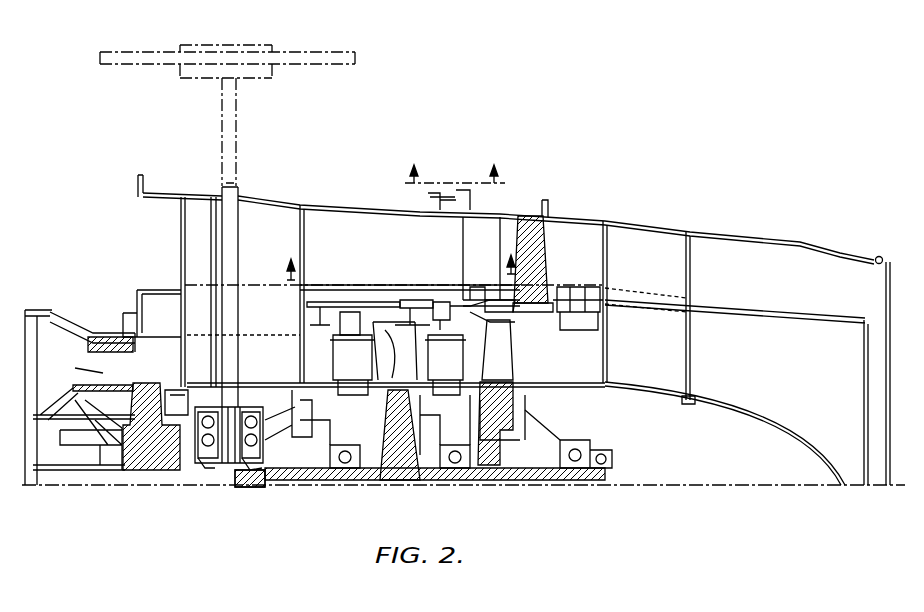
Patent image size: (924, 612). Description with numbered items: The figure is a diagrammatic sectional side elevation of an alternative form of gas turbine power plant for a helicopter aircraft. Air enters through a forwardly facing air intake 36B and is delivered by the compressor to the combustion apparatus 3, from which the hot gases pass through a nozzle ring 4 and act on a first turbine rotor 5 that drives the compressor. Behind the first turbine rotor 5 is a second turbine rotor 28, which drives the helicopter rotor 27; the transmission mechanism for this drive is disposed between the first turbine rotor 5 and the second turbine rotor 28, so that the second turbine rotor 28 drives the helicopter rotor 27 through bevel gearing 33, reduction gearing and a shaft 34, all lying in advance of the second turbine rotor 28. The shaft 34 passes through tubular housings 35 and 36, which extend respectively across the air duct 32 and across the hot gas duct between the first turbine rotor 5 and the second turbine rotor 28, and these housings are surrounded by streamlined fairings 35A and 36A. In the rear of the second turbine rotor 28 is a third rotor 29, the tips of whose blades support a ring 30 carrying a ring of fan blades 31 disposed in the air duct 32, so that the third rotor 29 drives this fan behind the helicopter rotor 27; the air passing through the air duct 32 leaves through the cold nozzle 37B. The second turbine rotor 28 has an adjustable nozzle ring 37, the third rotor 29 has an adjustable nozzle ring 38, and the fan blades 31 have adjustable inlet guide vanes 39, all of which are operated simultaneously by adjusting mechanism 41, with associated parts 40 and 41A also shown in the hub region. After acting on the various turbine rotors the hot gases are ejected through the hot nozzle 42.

The helicopter rotor 27 is at (318, 55).
The nozzle ring 4 is at (422, 160).
The combustion apparatus 3 is at (299, 255).
The tubular housing 35 is at (258, 205).
The streamlined fairing 35A is at (294, 205).
The shaft 34 is at (232, 232).
The air intake 36B is at (156, 257).
The tubular housing 36 is at (210, 345).
The streamlined fairing 36A is at (292, 367).
The air duct 32 is at (388, 256).
The adjusting mechanism 41 is at (335, 300).
The hub plate portion 41A is at (430, 300).
The seal member 40 is at (447, 300).
The adjustable inlet guide vanes 39 is at (497, 265).
The fan blades 31 is at (535, 237).
The nozzle 37B is at (885, 297).
The hot nozzle 42 is at (862, 375).
The first turbine rotor 5 is at (161, 378).
The adjustable nozzle ring 37 is at (365, 362).
The adjustable nozzle ring 38 is at (458, 362).
The third rotor 29 is at (513, 362).
The ring 30 is at (529, 313).
The second turbine rotor 28 is at (397, 362).
The bevel gearing 33 is at (248, 465).